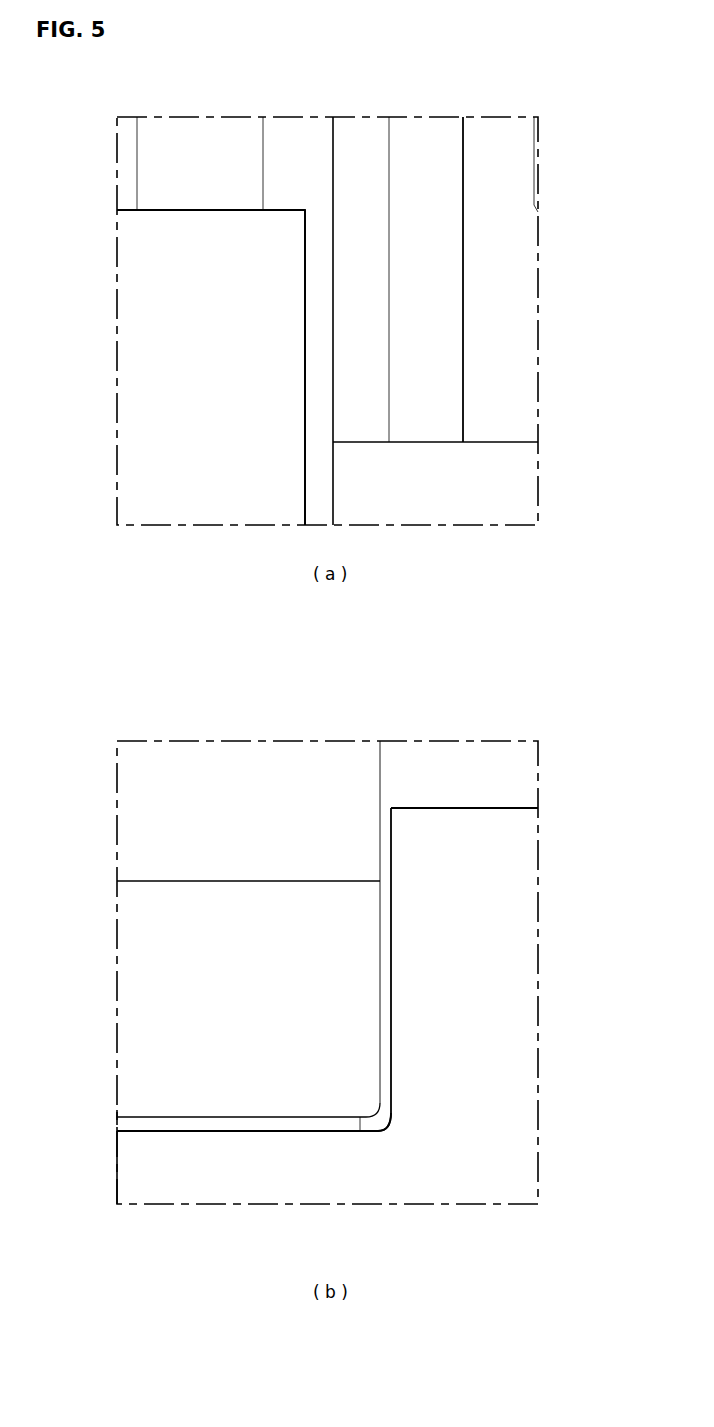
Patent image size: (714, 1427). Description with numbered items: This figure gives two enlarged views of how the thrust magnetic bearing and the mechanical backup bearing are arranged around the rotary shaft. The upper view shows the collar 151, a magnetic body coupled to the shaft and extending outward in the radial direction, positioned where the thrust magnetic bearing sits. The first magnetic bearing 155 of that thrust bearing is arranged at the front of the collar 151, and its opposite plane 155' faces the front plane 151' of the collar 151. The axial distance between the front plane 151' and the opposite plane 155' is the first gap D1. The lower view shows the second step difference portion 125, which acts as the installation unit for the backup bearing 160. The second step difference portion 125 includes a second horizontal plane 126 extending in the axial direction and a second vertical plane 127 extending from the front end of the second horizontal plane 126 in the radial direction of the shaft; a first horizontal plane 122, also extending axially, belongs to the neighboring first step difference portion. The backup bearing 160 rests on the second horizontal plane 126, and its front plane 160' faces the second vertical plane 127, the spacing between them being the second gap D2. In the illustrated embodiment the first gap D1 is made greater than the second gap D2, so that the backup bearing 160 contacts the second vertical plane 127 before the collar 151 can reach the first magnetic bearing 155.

The collar 151 is at (178, 321).
The front plane of the collar 151' is at (283, 293).
The first magnetic bearing 155 is at (435, 251).
The opposite plane of the thrust magnetic bearing 155' is at (346, 293).
The first gap D1 is at (252, 355).
The backup bearing 160 is at (216, 1006).
The front plane of the backup bearing 160' is at (358, 892).
The first horizontal plane 122 is at (455, 809).
The second vertical plane 127 is at (392, 1055).
The second horizontal plane 126 is at (152, 1132).
The second step difference portion 125 is at (388, 1140).
The second gap D2 is at (327, 962).